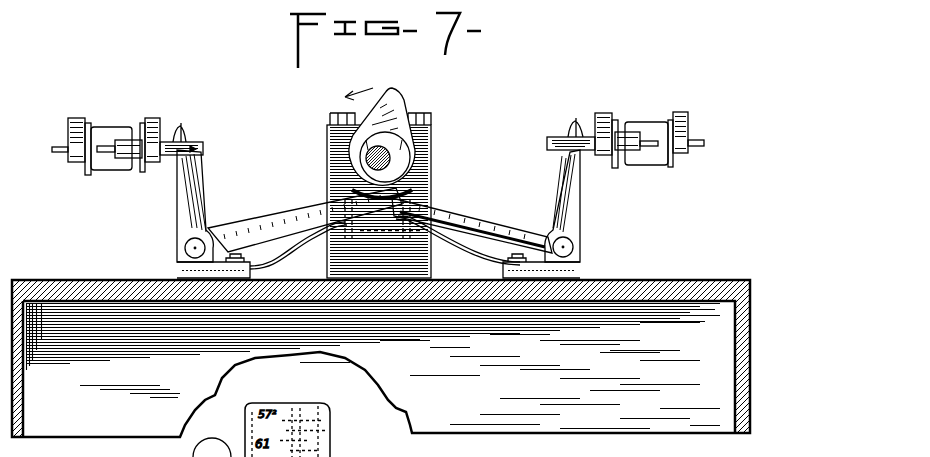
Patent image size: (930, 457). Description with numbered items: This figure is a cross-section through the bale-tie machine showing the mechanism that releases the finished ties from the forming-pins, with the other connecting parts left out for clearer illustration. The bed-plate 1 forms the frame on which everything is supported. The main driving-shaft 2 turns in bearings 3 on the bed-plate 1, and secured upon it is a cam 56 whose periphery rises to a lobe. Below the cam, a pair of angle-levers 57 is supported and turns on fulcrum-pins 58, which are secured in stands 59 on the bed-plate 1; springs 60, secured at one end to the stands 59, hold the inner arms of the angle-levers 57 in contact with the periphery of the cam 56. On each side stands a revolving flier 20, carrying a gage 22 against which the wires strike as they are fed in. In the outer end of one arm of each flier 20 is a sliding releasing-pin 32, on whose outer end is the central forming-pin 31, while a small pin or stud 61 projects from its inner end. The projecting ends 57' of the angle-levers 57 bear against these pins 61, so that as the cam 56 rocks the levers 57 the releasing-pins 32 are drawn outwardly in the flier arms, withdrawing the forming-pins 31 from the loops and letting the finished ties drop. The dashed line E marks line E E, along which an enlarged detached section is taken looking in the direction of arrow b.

The bed-plate 1 is at (72, 280).
The main driving-shaft 2 is at (390, 158).
The bearings 3 is at (384, 195).
The revolving fliers 20 is at (379, 140).
The gage 22 is at (104, 128).
The forming-pins 31 is at (104, 152).
The releasing-pins 32 is at (163, 157).
The cams 56 is at (395, 107).
The angle-levers 57 is at (380, 220).
The projecting ends of the angle-levers 57' is at (378, 130).
The fulcrum-pins 58 is at (185, 248).
The stands 59 is at (180, 272).
The spring 60 is at (385, 242).
The pin or stud 61 is at (200, 155).
The arrow b is at (257, 67).
The line E E is at (257, 280).